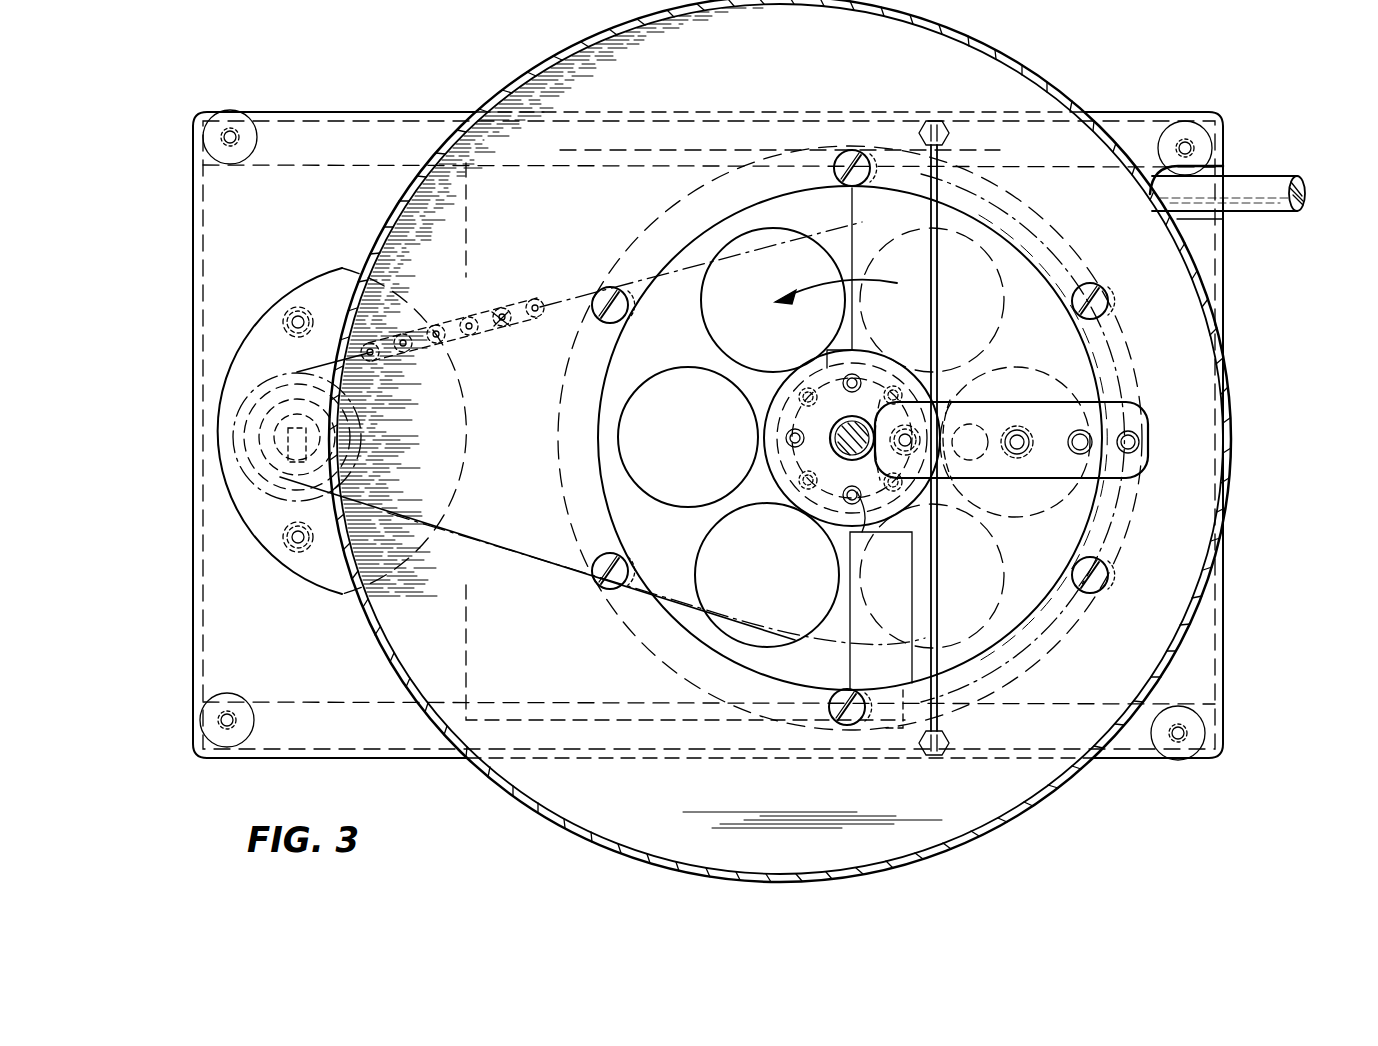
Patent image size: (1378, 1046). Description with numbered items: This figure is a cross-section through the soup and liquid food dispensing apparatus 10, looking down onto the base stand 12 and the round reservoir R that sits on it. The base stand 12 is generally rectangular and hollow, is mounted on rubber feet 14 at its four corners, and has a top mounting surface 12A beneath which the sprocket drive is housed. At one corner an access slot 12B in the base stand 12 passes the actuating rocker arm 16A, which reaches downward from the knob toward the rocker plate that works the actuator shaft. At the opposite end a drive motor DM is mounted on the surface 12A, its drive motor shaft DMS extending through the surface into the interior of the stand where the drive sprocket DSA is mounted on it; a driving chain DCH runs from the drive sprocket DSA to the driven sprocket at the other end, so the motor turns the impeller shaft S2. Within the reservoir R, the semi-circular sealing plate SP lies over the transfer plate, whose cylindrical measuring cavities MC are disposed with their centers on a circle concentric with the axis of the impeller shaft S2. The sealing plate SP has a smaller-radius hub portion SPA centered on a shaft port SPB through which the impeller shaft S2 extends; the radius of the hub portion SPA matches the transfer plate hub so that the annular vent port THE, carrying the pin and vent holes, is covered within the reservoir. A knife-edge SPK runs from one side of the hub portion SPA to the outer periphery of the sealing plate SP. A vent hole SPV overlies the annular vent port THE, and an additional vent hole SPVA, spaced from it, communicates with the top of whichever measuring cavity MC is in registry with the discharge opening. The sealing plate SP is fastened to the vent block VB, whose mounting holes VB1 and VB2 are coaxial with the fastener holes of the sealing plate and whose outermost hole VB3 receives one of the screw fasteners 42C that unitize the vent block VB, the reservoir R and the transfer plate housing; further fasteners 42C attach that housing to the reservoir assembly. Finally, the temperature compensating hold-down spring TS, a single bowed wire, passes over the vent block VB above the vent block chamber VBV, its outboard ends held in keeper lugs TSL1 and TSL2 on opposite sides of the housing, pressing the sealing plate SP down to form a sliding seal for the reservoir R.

The soup and liquid food dispensing apparatus 10 is at (508, 877).
The reservoir R is at (490, 786).
The base stand 12 is at (192, 182).
The top mounting surface 12A is at (313, 228).
The access slot 12B is at (1205, 164).
The rubber feet 14 is at (250, 126).
The actuating rocker arm 16A is at (1275, 190).
The screw fasteners 42C is at (846, 162).
The sealing plate SP is at (1069, 565).
The measuring cavities MC is at (790, 281).
The knife-edge SPK is at (845, 581).
The hub portion SPA is at (770, 392).
The annular vent port THE is at (772, 466).
The impeller shaft S2 is at (852, 428).
The shaft port SPB is at (862, 538).
The temperature compensating hold-down spring TS is at (940, 678).
The vent block VB is at (1064, 475).
The fastener port VB1 is at (1020, 434).
The fastener port VB2 is at (1080, 430).
The outermost fastening hole VB3 is at (1136, 440).
The vent hole SPV is at (926, 400).
The vent block chamber VBV is at (952, 382).
The additional vent hole SPVA is at (1020, 402).
The keeper lug TSL1 is at (946, 756).
The keeper lug TSL2 is at (980, 104).
The drive motor DM is at (300, 516).
The drive motor shaft DMS is at (334, 412).
The drive sprocket DSA is at (350, 432).
The driving chain DCH is at (490, 306).